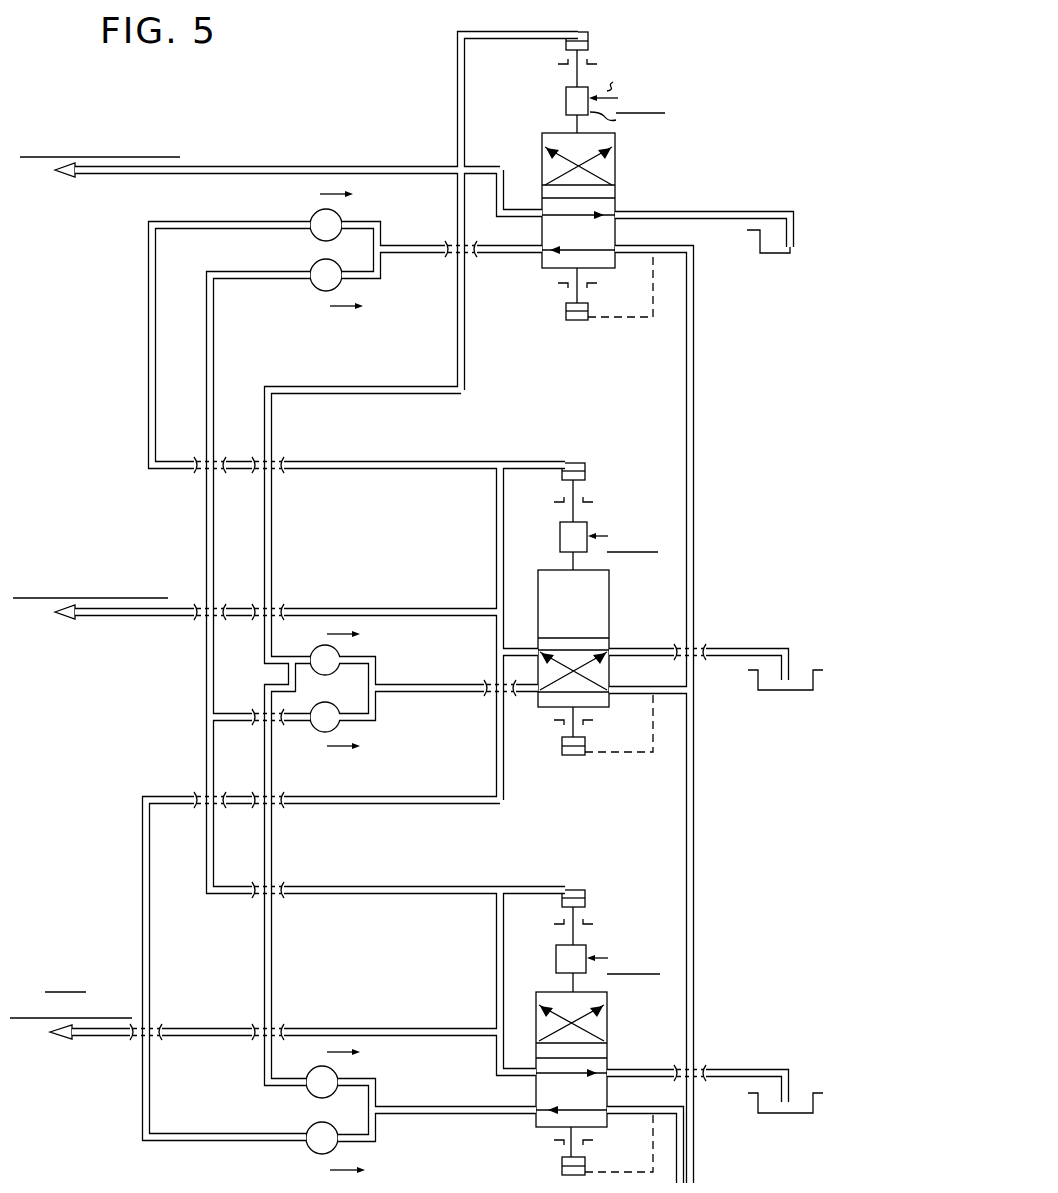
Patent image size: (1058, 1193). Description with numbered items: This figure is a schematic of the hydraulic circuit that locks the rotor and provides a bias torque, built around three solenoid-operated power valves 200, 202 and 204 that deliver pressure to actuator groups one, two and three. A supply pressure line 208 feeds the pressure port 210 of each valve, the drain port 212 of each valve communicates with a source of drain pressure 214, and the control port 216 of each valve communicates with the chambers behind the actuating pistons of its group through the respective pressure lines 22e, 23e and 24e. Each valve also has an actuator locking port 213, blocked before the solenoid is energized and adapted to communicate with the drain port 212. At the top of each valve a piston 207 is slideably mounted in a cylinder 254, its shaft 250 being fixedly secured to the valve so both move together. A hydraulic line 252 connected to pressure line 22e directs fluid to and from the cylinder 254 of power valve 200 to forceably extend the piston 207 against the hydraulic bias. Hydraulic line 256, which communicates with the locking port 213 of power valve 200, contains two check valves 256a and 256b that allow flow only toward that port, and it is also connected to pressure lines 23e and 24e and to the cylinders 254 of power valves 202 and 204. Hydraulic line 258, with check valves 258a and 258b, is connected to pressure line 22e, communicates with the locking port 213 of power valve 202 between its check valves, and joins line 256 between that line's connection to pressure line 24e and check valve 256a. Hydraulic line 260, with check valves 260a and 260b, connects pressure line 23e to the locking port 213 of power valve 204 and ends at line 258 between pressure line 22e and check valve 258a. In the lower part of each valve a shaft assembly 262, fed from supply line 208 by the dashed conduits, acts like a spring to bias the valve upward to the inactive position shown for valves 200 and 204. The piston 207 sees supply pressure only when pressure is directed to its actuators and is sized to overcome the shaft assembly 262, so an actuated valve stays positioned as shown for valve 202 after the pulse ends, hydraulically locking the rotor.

The power valve 200 is at (628, 162).
The power valve 202 is at (620, 630).
The power valve 204 is at (620, 1049).
The piston 207 is at (606, 55).
The supply pressure line 208 is at (698, 412).
The pressure port 210 is at (618, 249).
The drain port 212 is at (618, 212).
The actuator locking port 213 is at (540, 258).
The source of drain pressure 214 is at (776, 258).
The control port 216 is at (540, 212).
The pressure line 22e is at (305, 168).
The pressure line 23e is at (372, 612).
The pressure line 24e is at (372, 1032).
The shaft 250 is at (563, 72).
The hydraulic line 252 is at (458, 72).
The cylinder 254 is at (592, 41).
The hydraulic line 256 is at (148, 356).
The check valve 256a is at (343, 283).
The check valve 256b is at (340, 216).
The hydraulic line 258 is at (272, 520).
The check valve 258a is at (340, 651).
The check valve 258b is at (341, 727).
The hydraulic line 260 is at (272, 777).
The check valve 260a is at (340, 1075).
The check valve 260b is at (307, 1148).
The shaft assembly 262 is at (566, 320).